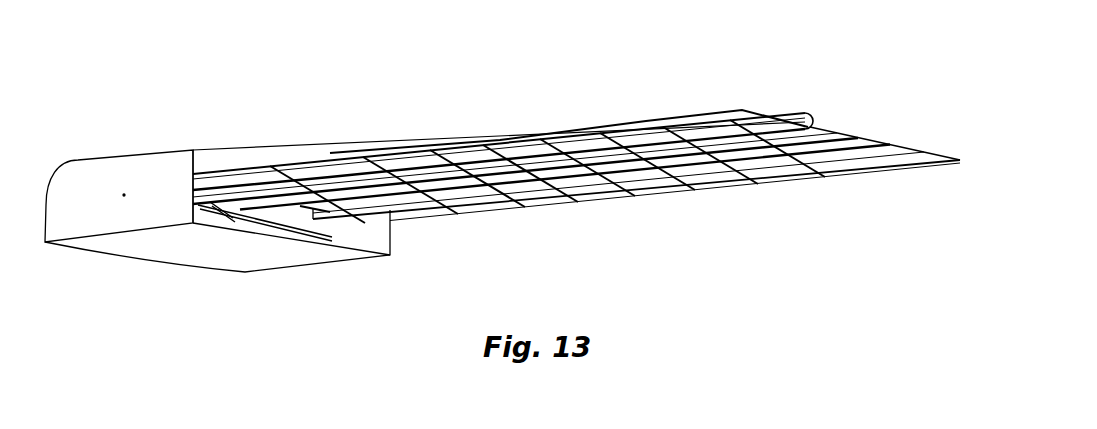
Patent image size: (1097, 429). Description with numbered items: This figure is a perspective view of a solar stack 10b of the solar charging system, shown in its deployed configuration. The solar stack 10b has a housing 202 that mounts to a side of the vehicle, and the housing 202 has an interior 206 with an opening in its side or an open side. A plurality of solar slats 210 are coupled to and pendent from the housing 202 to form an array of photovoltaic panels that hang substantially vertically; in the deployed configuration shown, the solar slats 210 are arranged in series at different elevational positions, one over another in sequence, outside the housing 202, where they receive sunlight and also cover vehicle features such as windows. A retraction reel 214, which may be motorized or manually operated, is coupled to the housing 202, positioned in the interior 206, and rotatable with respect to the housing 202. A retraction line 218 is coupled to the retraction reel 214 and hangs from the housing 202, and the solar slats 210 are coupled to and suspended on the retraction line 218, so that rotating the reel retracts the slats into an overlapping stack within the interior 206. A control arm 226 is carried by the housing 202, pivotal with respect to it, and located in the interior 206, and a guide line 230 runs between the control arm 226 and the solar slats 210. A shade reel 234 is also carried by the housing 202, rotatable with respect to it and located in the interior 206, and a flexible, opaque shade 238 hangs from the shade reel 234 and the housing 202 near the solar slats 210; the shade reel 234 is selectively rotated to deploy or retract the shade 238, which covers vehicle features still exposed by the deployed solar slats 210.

The solar stack 10b is at (278, 104).
The housing 202 is at (113, 168).
The interior 206 is at (212, 163).
The solar slats 210 is at (852, 133).
The retraction reel 214 is at (277, 228).
The retraction line 218 is at (409, 166).
The control arm 226 is at (320, 243).
The guide line 230 is at (880, 168).
The shade reel 234 is at (318, 218).
The shade 238 is at (610, 137).